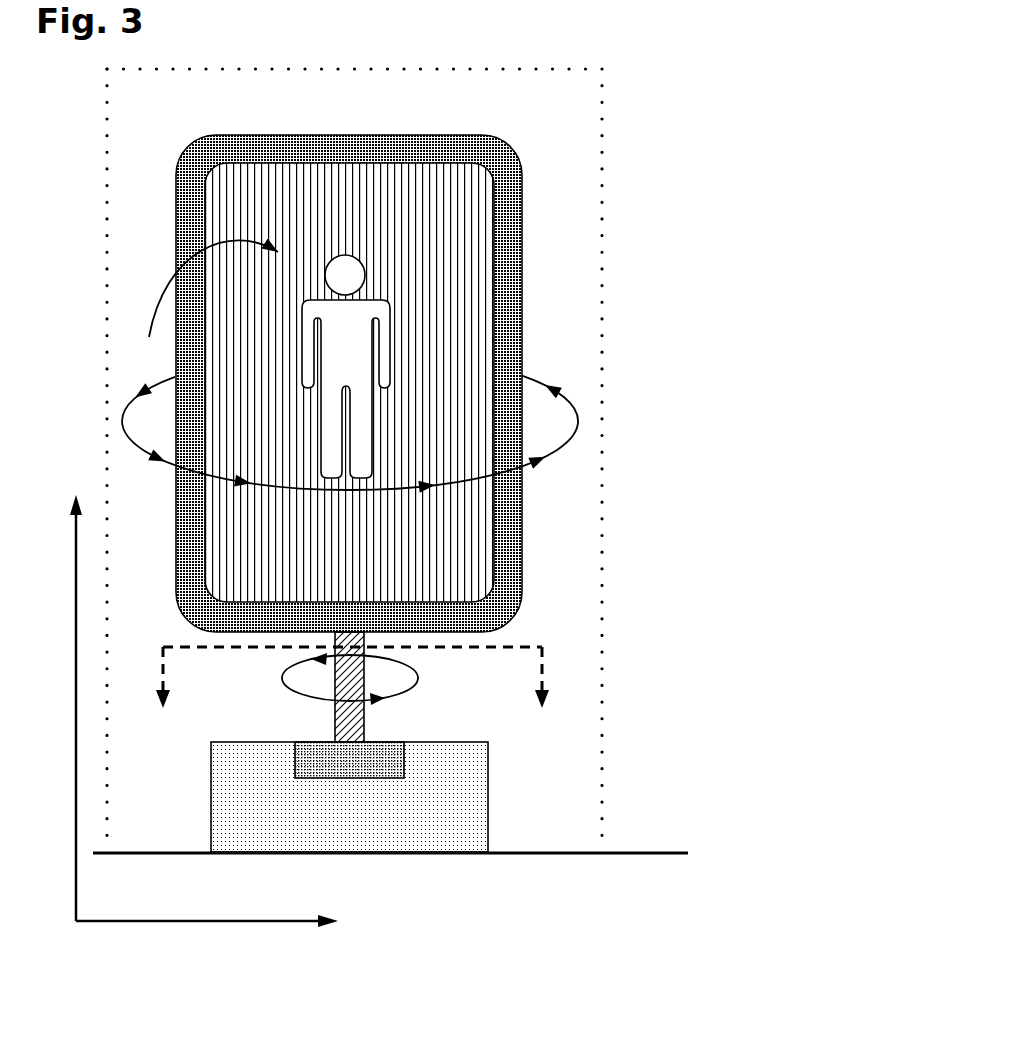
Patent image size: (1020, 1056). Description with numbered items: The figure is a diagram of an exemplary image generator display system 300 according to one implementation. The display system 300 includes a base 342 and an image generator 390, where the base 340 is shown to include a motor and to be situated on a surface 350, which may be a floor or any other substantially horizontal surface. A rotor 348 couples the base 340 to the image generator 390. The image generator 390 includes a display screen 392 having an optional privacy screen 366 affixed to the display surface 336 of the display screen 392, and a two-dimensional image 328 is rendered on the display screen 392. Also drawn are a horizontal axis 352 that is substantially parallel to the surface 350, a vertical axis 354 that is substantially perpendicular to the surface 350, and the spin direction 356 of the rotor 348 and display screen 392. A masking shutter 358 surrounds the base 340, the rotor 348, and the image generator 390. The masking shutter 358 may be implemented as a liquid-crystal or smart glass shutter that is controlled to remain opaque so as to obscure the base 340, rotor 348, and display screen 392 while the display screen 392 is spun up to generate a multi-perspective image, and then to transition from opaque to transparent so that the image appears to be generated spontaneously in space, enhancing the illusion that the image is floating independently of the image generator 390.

The image generator display system 300 is at (403, 429).
The two-dimensional (2D) image 328 is at (385, 286).
The display surface 336 is at (203, 300).
The base 340 is at (378, 797).
The base 342 is at (349, 760).
The rotor 348 is at (335, 724).
The surface 350 is at (630, 852).
The horizontal axis 352 is at (198, 920).
The vertical axis 354 is at (76, 645).
The spin direction 356 is at (567, 443).
The masking shutter 358 is at (604, 330).
The privacy screen 366 is at (338, 216).
The image generator 390 is at (376, 360).
The display screen 392 is at (466, 134).